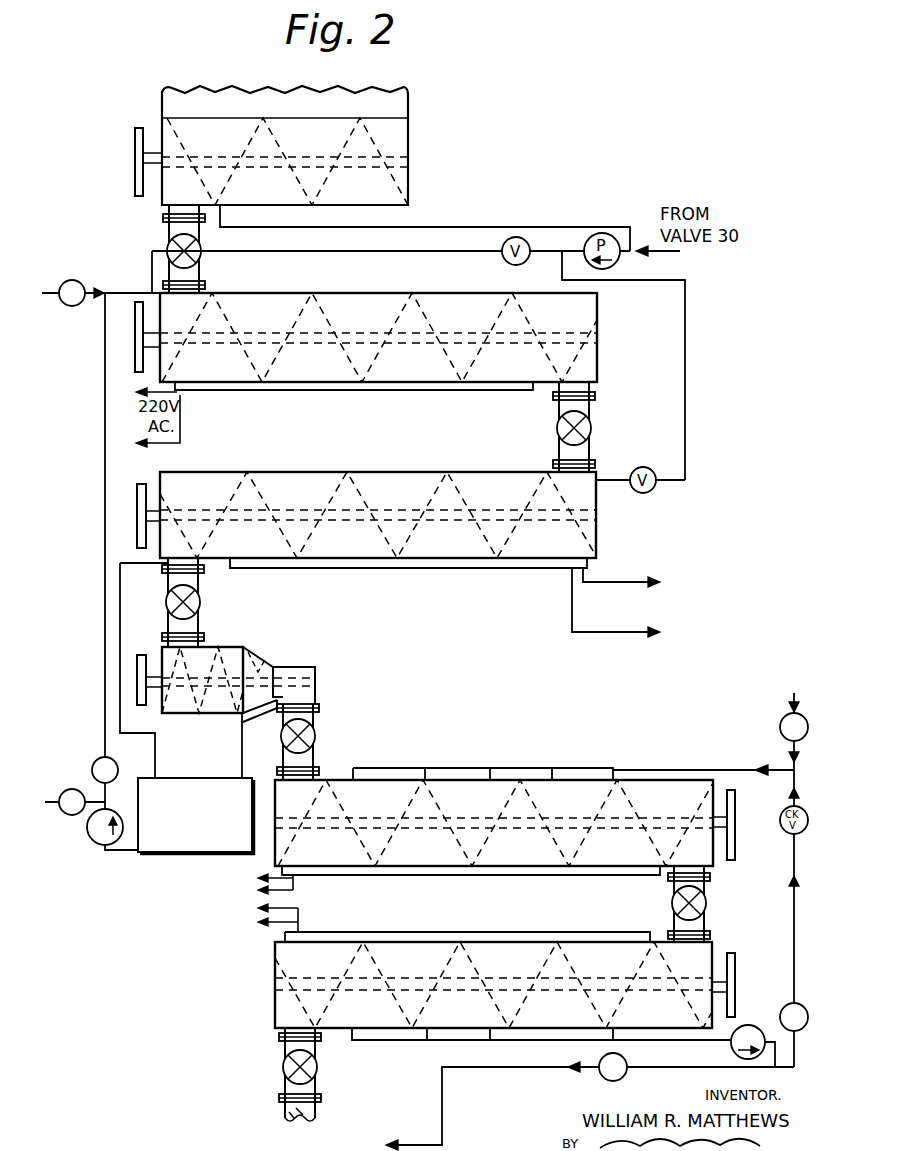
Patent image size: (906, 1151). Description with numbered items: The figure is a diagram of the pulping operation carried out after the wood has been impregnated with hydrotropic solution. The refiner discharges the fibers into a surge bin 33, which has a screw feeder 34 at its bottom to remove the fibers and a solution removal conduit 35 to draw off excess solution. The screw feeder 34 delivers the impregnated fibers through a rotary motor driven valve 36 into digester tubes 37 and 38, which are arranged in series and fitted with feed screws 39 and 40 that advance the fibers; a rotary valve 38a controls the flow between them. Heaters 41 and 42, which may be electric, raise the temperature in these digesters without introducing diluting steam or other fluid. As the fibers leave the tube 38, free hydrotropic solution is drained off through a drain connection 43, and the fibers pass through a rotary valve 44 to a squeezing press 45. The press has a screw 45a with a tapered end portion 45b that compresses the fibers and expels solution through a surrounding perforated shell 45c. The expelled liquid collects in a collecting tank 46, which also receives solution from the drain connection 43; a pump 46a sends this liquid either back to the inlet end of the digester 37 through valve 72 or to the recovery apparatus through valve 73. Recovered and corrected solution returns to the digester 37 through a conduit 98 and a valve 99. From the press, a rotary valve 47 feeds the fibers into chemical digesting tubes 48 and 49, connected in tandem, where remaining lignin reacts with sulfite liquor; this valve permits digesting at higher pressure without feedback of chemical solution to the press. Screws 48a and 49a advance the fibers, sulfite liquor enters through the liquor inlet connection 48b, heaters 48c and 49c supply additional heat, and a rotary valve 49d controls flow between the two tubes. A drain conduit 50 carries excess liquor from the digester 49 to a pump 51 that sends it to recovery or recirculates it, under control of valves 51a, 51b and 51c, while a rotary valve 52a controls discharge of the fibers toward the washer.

The surge bin 33 is at (410, 105).
The screw feeder 34 is at (231, 214).
The solution removal conduit 35 is at (432, 229).
The rotary motor driven valve 36 is at (202, 256).
The digester tube 37 is at (385, 296).
The digester tube 38 is at (396, 471).
The rotary valve 38a is at (556, 430).
The feed screw 39 is at (274, 382).
The feed screw 40 is at (337, 471).
The heater 41 is at (432, 391).
The heater 42 is at (440, 571).
The drain connection 43 is at (122, 611).
The rotary valve 44 is at (203, 605).
The squeezing press 45 is at (244, 648).
The screw 45a is at (203, 745).
The tapered end portion 45b is at (268, 657).
The perforated shell 45c is at (255, 723).
The collecting tank 46 is at (181, 770).
The pump 46a is at (103, 846).
The rotary valve 47 is at (316, 736).
The digesting tube 48 is at (438, 860).
The screw 48a is at (492, 866).
The liquor inlet connection 48b is at (645, 771).
The heater 48c is at (573, 884).
The digesting tube 49 is at (392, 942).
The screw 49a is at (478, 948).
The heater 49c is at (598, 936).
The rotary valve 49d is at (706, 903).
The drain conduit 50 is at (653, 1046).
The pump 51 is at (750, 1025).
The valve 51a is at (627, 1074).
The valve 51b is at (808, 1019).
The valve 51c is at (808, 728).
The rotary valve 52a is at (283, 1066).
The valve 72 is at (96, 761).
The valve 73 is at (69, 815).
The conduit 98 is at (98, 291).
The valve 99 is at (73, 306).